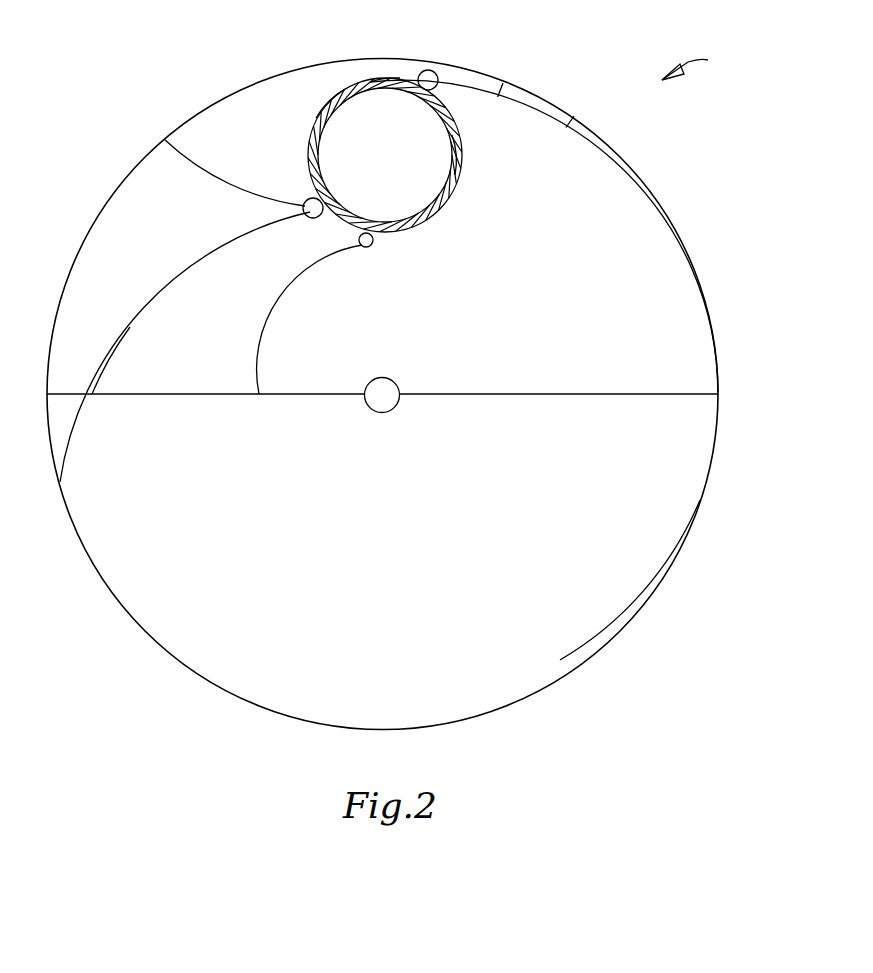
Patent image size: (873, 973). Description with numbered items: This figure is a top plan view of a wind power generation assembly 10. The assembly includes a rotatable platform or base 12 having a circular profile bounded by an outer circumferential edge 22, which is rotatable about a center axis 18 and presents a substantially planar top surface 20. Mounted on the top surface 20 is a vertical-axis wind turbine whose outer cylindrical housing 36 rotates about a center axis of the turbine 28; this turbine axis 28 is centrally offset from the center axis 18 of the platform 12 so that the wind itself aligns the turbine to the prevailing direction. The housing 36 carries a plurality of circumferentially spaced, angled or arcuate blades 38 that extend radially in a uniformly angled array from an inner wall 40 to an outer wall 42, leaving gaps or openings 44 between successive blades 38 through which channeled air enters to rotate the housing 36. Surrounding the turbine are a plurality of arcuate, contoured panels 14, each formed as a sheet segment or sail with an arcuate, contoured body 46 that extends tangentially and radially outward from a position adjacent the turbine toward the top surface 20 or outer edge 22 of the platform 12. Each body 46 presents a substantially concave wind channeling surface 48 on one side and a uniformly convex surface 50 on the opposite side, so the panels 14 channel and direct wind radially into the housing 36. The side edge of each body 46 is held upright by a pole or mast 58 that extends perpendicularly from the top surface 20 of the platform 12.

The wind power generation assembly 10 is at (700, 62).
The rotatable platform or base 12 is at (452, 698).
The arcuate, contoured panels 14 is at (175, 148).
The center axis 18 is at (392, 378).
The planar top surface 20 is at (418, 600).
The outer circumferential edge 22 is at (625, 627).
The center axis of the turbine 28 is at (383, 78).
The outer cylindrical housing 36 is at (395, 78).
The blades 38 is at (332, 104).
The inner wall 40 is at (449, 172).
The outer wall 42 is at (455, 147).
The gaps or openings 44 is at (412, 227).
The arcuate, contoured body 46 is at (574, 116).
The wind channeling surface 48 is at (215, 185).
The convex surface 50 is at (213, 190).
The pole or mast 58 is at (437, 73).